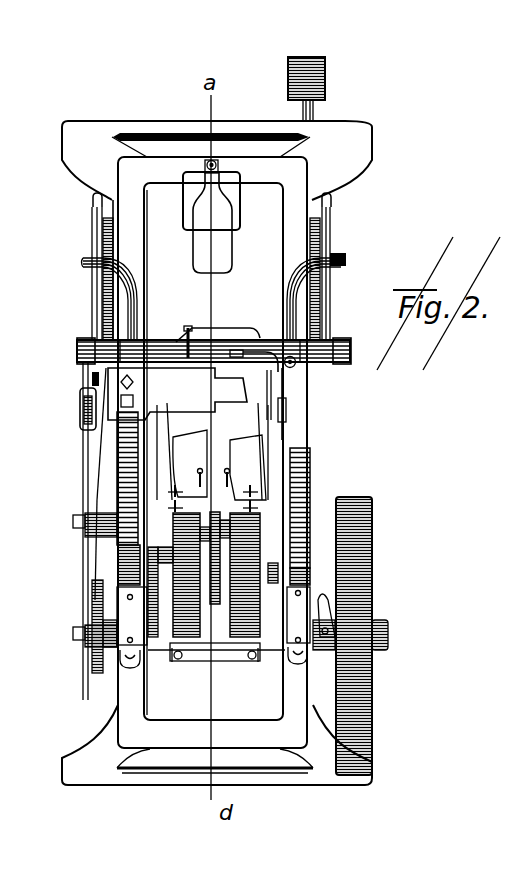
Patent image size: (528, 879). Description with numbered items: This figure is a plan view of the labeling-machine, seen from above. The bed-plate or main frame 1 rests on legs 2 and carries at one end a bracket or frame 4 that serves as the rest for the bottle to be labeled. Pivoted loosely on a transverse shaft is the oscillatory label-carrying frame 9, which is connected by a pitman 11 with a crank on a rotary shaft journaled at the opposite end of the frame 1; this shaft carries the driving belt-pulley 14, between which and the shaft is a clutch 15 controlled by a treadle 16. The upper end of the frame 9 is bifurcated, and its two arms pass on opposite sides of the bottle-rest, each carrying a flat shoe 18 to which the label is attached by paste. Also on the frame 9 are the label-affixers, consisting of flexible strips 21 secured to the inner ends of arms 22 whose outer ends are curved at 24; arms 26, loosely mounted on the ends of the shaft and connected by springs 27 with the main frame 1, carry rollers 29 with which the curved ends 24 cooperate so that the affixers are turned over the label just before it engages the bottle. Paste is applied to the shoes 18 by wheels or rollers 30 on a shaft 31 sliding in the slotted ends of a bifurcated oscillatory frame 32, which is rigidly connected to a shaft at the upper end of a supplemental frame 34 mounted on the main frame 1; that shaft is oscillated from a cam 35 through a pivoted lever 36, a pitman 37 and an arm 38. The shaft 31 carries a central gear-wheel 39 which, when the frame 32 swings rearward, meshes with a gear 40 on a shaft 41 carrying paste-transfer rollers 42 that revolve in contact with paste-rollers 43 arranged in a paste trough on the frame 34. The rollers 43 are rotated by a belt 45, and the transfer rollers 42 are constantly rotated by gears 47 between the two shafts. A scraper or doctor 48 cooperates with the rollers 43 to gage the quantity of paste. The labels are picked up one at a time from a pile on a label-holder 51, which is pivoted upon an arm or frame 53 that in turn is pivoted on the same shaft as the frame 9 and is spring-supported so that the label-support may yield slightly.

The bed-plate or main frame 1 is at (204, 458).
The legs 2 is at (217, 453).
The bracket or frame 4 is at (187, 212).
The oscillatory label-carrying frame 9 is at (190, 327).
The pitman 11 is at (207, 440).
The driving belt-pulley 14 is at (365, 527).
The clutch 15 is at (333, 623).
The treadle 16 is at (326, 76).
The shoes 18 is at (214, 373).
The strips 21 is at (295, 418).
The arms 22 is at (295, 382).
The curved outer ends 24 is at (88, 258).
The arms 26 is at (95, 315).
The springs 27 is at (107, 288).
The rollers 29 is at (95, 228).
The wheels or rollers 30 is at (190, 523).
The shaft 31 is at (253, 523).
The bifurcated oscillatory frame 32 is at (343, 435).
The supplemental frame 34 is at (122, 458).
The cam 35 is at (92, 665).
The pivoted lever 36 is at (90, 497).
The pitman 37 is at (82, 413).
The arm 38 is at (92, 382).
The gear-wheel 39 is at (243, 525).
The gear 40 is at (218, 592).
The shaft 41 is at (303, 567).
The paste-transfer rollers 42 is at (125, 562).
The paste-rollers 43 is at (243, 645).
The belt 45 is at (280, 655).
The gears 47 is at (158, 620).
The scraper or doctor 48 is at (187, 647).
The label-holder 51 is at (248, 465).
The arm or frame 53 is at (273, 402).